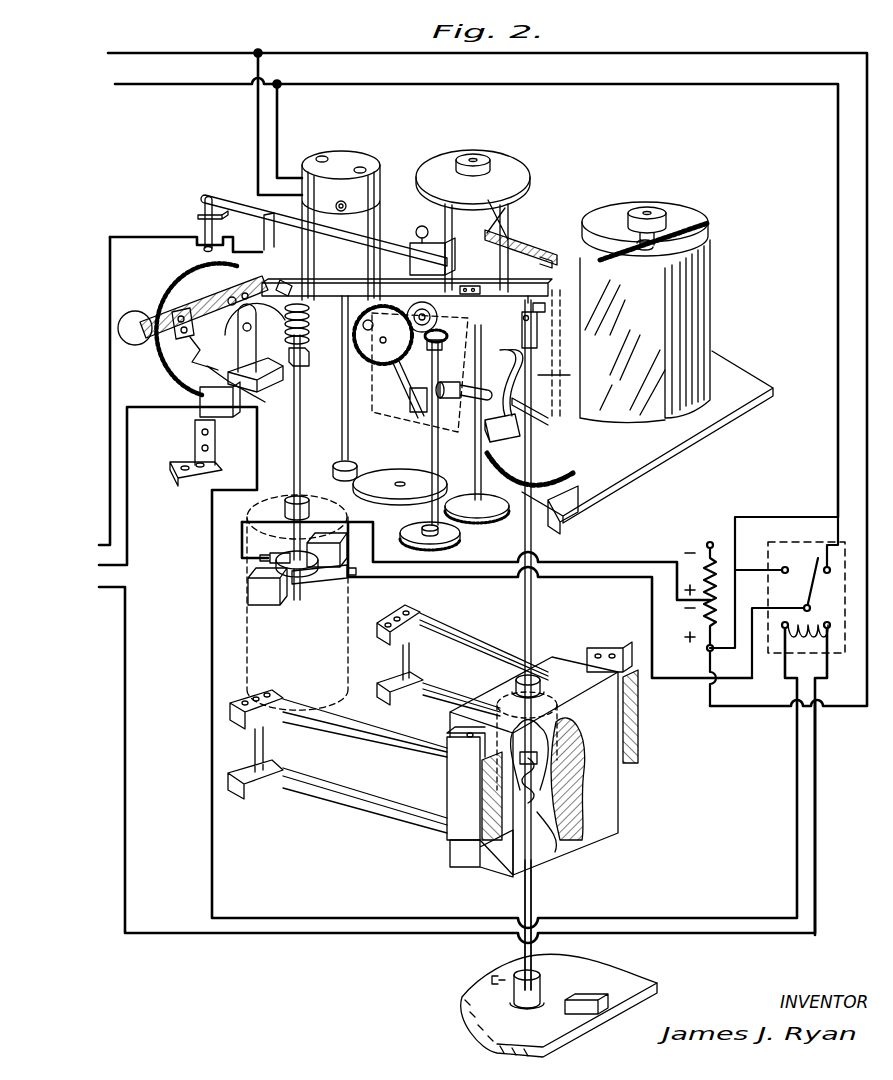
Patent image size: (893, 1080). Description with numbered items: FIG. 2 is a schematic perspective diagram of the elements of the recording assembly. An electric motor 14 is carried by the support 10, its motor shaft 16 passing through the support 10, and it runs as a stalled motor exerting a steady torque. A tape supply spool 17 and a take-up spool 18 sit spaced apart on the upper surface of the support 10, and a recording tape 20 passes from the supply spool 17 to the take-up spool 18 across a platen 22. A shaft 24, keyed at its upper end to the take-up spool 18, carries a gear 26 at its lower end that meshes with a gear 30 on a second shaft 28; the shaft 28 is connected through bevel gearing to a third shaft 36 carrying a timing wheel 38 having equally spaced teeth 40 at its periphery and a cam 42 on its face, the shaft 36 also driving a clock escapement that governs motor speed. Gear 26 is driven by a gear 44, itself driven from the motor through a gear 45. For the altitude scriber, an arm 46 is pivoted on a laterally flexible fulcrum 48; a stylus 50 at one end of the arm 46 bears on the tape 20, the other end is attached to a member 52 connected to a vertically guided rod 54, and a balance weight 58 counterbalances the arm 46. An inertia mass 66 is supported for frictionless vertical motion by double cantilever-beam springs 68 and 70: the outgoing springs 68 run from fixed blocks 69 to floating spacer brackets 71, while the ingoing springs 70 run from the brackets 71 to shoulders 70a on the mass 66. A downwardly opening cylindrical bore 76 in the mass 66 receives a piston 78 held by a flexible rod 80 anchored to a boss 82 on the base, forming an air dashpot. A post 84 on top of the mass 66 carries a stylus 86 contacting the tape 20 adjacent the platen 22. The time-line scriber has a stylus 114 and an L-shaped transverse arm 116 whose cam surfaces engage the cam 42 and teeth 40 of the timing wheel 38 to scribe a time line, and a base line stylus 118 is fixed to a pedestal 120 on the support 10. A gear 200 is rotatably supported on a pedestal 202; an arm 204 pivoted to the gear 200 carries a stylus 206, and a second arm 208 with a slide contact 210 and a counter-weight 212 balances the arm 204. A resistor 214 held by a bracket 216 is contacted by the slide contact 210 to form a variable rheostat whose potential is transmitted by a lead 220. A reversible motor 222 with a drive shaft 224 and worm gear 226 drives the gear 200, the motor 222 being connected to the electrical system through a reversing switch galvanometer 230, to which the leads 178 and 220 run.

The support 10 is at (740, 392).
The electric motor 14 is at (352, 160).
The motor shaft 16 is at (342, 416).
The tape supply spool 17 is at (700, 220).
The take-up spool 18 is at (518, 168).
The recording tape 20 is at (615, 415).
The platen 22 is at (522, 246).
The shaft 24 is at (475, 452).
The gear 26 is at (490, 524).
The second shaft 28 is at (432, 450).
The gear 30 is at (456, 538).
The third shaft 36 is at (308, 364).
The timing wheel 38 is at (402, 392).
The teeth 40 is at (378, 364).
The cam 42 is at (360, 320).
The gear 44 is at (392, 470).
The gear 45 is at (336, 477).
The arm 46 is at (236, 192).
The laterally flexible fulcrum 48 is at (264, 238).
The stylus 50 is at (448, 244).
The member 52 is at (198, 203).
The rod 54 is at (203, 228).
The balance weight 58 is at (416, 240).
The inertia mass 66 is at (608, 786).
The outgoing springs 68 is at (492, 642).
The blocks 69 is at (446, 790).
The ingoing springs 70 is at (458, 660).
The shoulders 70a is at (474, 800).
The floating spacer brackets 71 is at (392, 662).
The cylindrical bore 76 is at (553, 838).
The piston 78 is at (568, 742).
The flexible rod 80 is at (540, 900).
The boss 82 is at (540, 986).
The post 84 is at (540, 626).
The stylus 86 is at (548, 310).
The stylus 114 is at (545, 440).
The L-shaped transverse arm 116 is at (398, 405).
The base line stylus 118 is at (522, 362).
The pedestal 120 is at (569, 369).
The lead 178 is at (816, 805).
The gear 200 is at (285, 282).
The pedestal 202 is at (272, 392).
The arm 204 is at (348, 282).
The stylus 206 is at (542, 258).
The second arm 208 is at (215, 304).
The slide contact 210 is at (167, 284).
The counter-weight 212 is at (138, 312).
The resistor 214 is at (168, 350).
The bracket 216 is at (245, 456).
The lead 220 is at (212, 648).
The reversible motor 222 is at (329, 600).
The drive shaft 224 is at (294, 470).
The worm gear 226 is at (308, 342).
The reversing switch galvanometer 230 is at (801, 504).